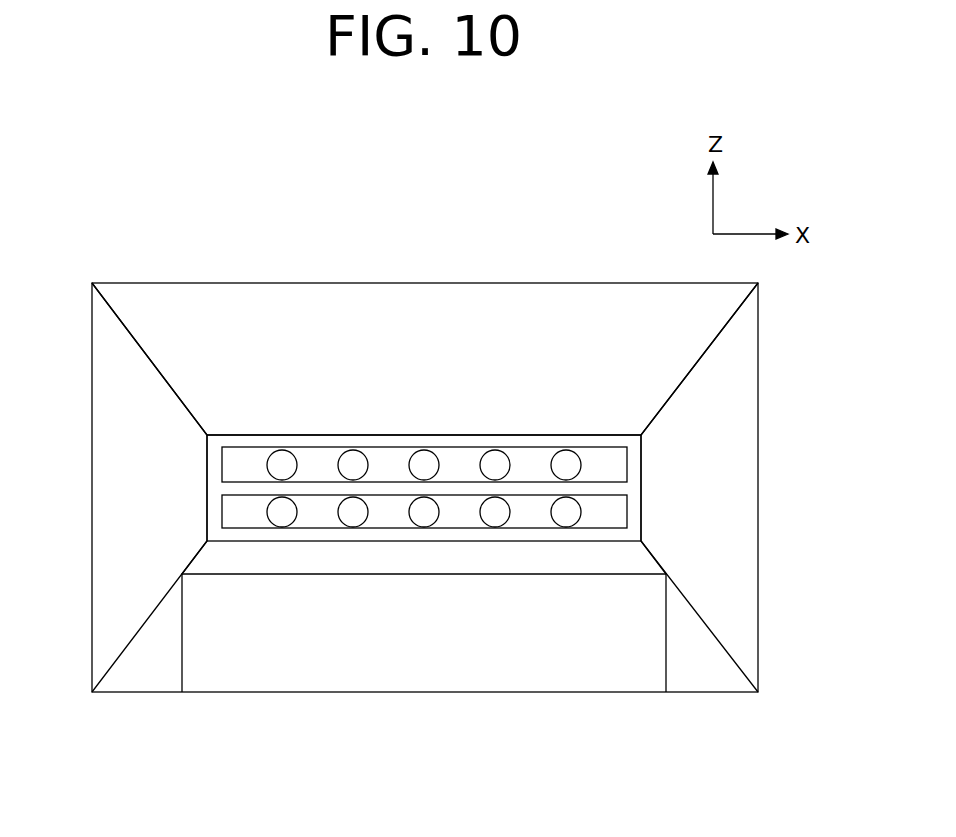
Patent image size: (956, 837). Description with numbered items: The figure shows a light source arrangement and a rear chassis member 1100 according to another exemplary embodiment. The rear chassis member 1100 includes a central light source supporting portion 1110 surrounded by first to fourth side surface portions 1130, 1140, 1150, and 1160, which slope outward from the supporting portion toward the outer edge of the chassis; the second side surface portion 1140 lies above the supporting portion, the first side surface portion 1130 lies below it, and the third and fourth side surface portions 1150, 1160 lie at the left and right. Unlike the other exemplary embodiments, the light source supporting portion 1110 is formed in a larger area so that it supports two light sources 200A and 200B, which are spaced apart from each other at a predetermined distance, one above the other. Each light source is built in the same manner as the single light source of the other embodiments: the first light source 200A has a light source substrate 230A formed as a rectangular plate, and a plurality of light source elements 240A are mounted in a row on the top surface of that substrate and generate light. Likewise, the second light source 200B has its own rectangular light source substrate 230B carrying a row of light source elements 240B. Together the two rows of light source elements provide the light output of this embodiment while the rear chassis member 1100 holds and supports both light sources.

The rear chassis member 1100 is at (88, 252).
The light source supporting portion 1110 is at (243, 447).
The first side surface portion 1130 is at (350, 682).
The second side surface portion 1140 is at (418, 298).
The third side surface portion 1150 is at (98, 458).
The fourth side surface portion 1160 is at (748, 410).
The light source 200A is at (522, 362).
The light source 200B is at (522, 617).
The light source substrate 230A is at (530, 462).
The light source substrate 230B is at (530, 515).
The light source elements 240A is at (568, 462).
The light source elements 240B is at (568, 515).